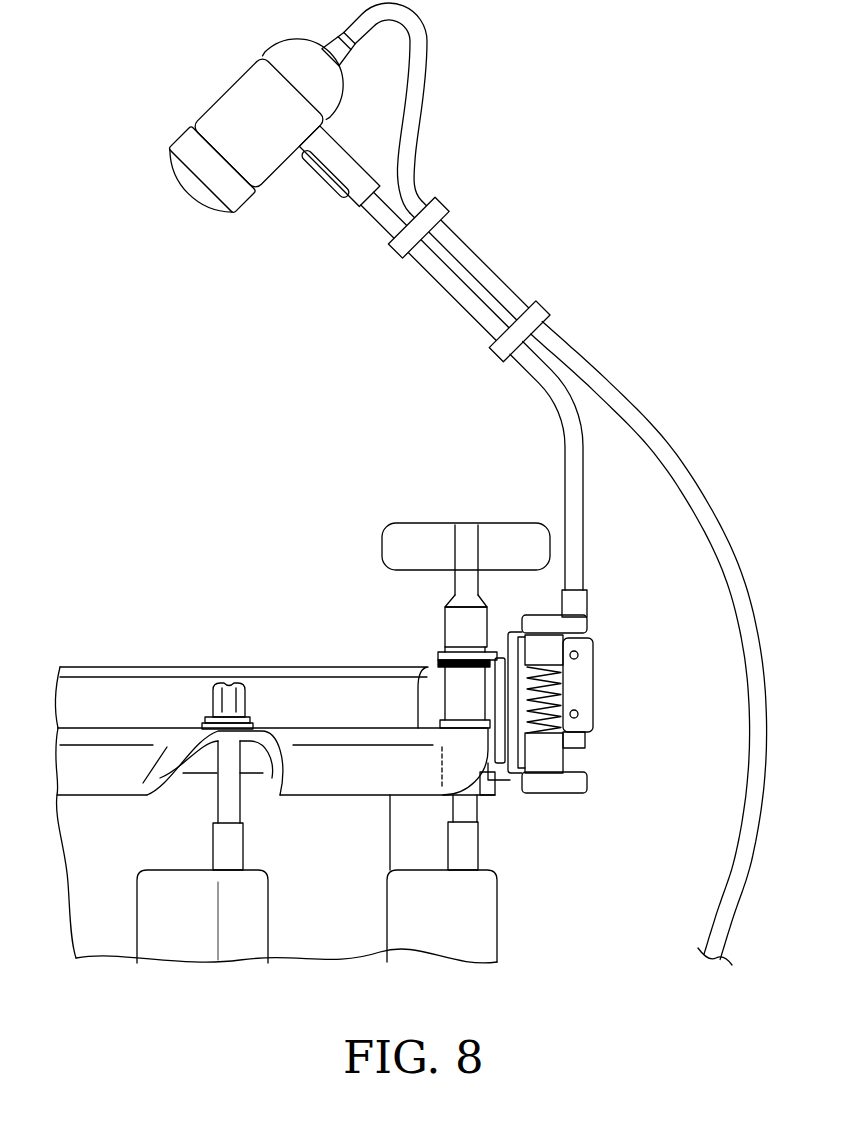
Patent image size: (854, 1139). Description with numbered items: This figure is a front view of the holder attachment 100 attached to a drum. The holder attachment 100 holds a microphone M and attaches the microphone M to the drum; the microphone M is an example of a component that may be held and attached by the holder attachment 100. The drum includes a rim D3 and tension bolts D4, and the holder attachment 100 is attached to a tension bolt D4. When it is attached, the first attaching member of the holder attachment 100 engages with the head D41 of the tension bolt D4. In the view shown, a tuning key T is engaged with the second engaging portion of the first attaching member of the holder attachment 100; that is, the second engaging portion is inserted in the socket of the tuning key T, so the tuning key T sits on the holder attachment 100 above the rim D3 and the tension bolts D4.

The microphone M is at (193, 87).
The tuning key T is at (413, 538).
The rim D3 is at (344, 664).
The head of the tension bolt D41 is at (229, 681).
The tension bolt D4 is at (235, 803).
The holder attachment 100 is at (641, 727).